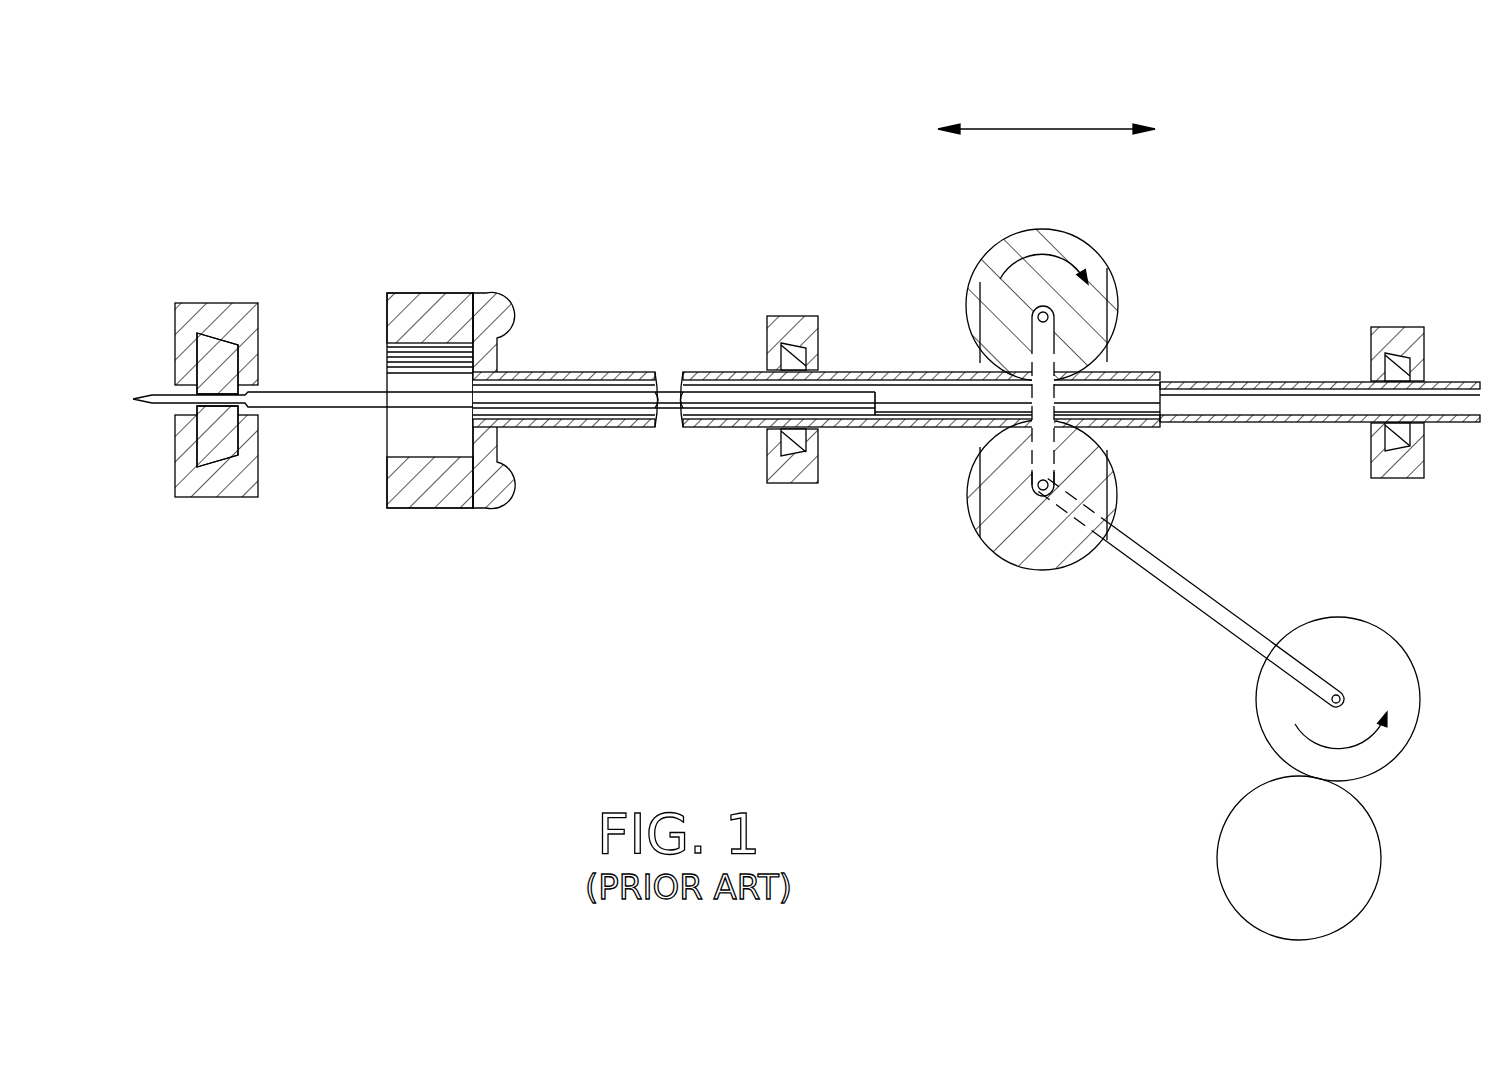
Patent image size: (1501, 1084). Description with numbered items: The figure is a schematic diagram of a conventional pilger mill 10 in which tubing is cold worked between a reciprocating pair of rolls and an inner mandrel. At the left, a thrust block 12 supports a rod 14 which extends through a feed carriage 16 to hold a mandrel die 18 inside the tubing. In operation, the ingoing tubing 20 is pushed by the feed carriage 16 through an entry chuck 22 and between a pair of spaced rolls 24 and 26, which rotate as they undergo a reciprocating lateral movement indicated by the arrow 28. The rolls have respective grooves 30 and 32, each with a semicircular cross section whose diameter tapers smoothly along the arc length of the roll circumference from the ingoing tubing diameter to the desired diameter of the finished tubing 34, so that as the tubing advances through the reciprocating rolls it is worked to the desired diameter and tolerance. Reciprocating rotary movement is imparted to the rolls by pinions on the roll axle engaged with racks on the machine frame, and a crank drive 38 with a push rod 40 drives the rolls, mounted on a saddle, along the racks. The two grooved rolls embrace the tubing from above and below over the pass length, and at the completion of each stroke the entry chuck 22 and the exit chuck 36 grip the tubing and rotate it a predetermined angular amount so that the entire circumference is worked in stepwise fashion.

The pilger mill 10 is at (678, 556).
The thrust block 12 is at (218, 493).
The rod 14 is at (283, 398).
The feed carriage 16 is at (430, 497).
The mandrel die 18 is at (935, 400).
The ingoing tubing 20 is at (555, 372).
The entry chuck 22 is at (785, 483).
The roll 24 is at (1023, 553).
The roll 26 is at (1043, 247).
The arrow 28 is at (1048, 129).
The groove 30 is at (1110, 483).
The groove 32 is at (1108, 330).
The finished tubing 34 is at (1310, 383).
The exit chuck 36 is at (1400, 480).
The crank drive 38 is at (1262, 704).
The push rod 40 is at (1268, 640).